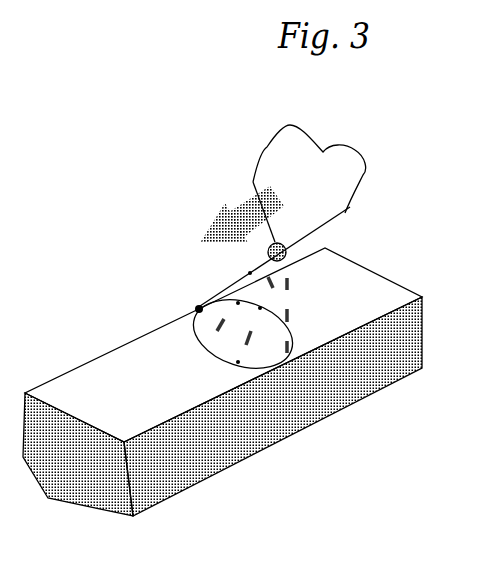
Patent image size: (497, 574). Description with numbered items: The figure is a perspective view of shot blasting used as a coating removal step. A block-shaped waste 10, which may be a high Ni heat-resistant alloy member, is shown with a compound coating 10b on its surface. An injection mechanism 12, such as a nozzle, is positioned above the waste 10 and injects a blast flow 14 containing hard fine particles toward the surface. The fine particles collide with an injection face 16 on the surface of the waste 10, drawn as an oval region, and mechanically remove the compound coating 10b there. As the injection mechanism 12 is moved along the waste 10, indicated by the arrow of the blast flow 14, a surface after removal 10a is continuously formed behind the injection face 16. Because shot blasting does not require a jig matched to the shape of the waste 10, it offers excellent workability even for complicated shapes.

The waste 10 is at (308, 417).
The surface after removal 10a is at (370, 287).
The compound coating 10b is at (137, 360).
The injection mechanism 12 is at (313, 210).
The blast flow 14 is at (222, 290).
The injection face 16 is at (197, 303).